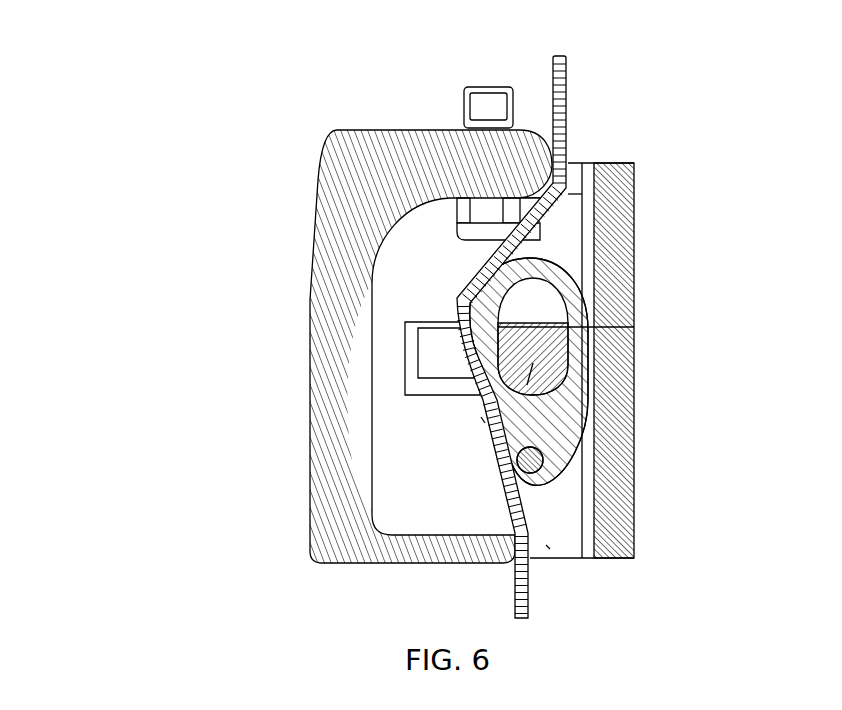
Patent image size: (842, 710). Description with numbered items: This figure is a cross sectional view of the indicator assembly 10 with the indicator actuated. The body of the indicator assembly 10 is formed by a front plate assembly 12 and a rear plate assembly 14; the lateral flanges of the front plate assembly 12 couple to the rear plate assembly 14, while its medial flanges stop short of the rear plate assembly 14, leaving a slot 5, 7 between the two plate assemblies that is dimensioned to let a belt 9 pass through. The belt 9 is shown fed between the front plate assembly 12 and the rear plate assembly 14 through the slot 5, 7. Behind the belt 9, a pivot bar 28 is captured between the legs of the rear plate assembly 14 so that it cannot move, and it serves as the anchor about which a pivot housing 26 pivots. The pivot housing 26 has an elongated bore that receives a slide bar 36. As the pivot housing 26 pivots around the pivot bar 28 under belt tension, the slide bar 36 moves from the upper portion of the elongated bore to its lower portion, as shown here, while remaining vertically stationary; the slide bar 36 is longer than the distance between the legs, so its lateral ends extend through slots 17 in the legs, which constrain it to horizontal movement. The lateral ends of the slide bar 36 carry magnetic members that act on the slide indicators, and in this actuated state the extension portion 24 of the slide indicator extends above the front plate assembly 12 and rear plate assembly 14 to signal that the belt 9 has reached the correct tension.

The indicator assembly 10 is at (253, 140).
The extension portion 24 is at (490, 110).
The belt 9 is at (566, 97).
The slot 7 is at (568, 194).
The rear plate assembly 14 is at (634, 333).
The slot 17 is at (448, 350).
The front plate assembly 12 is at (310, 482).
The slide bar 36 is at (482, 420).
The pivot housing 26 is at (560, 430).
The pivot bar 28 is at (530, 455).
The slot 5 is at (548, 547).